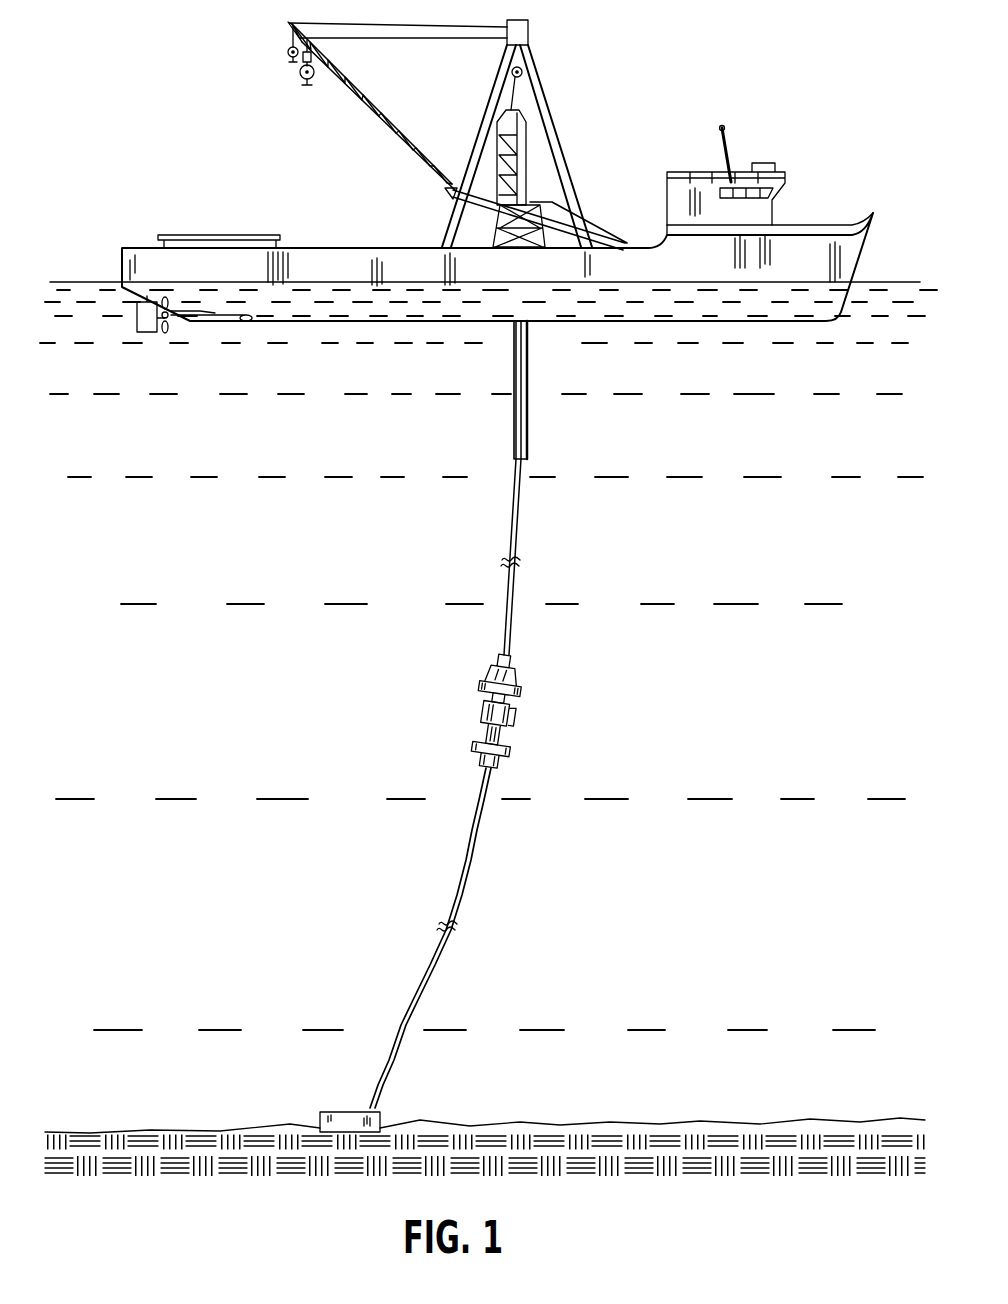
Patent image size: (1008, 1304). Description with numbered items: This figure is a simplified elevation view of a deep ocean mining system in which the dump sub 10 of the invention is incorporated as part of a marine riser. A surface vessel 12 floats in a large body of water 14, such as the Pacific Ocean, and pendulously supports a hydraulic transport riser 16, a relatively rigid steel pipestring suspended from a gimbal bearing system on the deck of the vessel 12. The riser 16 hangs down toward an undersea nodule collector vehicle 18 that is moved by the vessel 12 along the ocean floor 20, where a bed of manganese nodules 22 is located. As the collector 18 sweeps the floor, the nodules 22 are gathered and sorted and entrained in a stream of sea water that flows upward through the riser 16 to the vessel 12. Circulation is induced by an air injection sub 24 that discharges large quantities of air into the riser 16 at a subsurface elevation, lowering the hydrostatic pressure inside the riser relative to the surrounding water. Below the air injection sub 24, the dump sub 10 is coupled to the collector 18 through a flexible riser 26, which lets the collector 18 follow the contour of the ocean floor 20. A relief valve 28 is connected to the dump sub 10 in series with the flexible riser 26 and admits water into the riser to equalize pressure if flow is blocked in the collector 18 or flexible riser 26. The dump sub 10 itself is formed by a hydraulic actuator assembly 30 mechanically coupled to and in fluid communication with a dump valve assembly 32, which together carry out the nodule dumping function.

The dump sub 10 is at (500, 708).
The surface vessel 12 is at (620, 129).
The body of water 14 is at (78, 283).
The hydraulic transport riser 16 is at (513, 512).
The undersea nodule collector vehicle 18 is at (335, 1110).
The ocean floor 20 is at (90, 1132).
The manganese nodules 22 is at (426, 1114).
The air injection sub 24 is at (528, 430).
The flexible riser 26 is at (463, 869).
The relief valve 28 is at (489, 755).
The hydraulic actuator assembly 30 is at (501, 679).
The dump valve assembly 32 is at (497, 723).